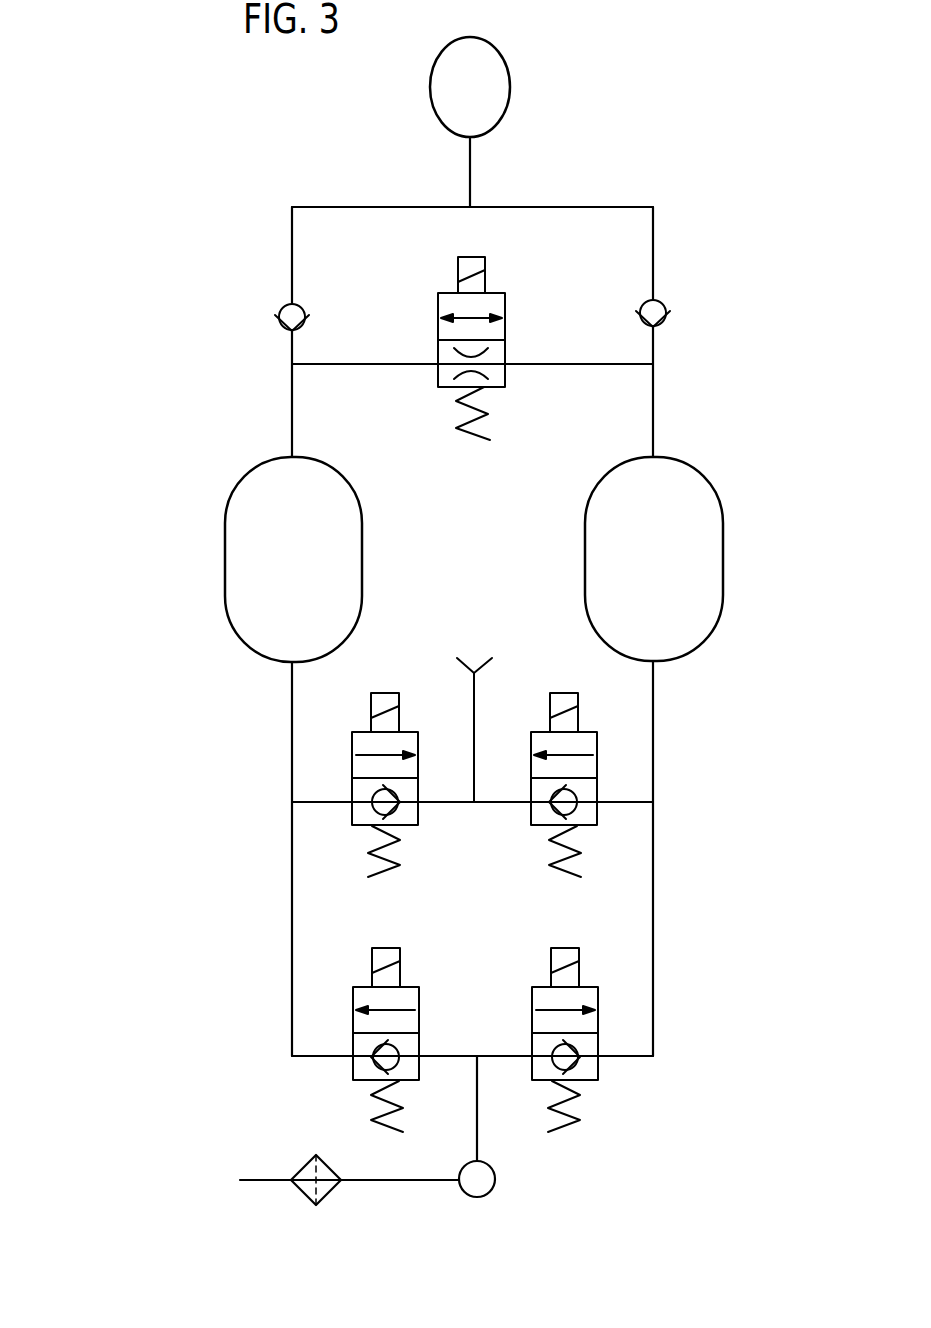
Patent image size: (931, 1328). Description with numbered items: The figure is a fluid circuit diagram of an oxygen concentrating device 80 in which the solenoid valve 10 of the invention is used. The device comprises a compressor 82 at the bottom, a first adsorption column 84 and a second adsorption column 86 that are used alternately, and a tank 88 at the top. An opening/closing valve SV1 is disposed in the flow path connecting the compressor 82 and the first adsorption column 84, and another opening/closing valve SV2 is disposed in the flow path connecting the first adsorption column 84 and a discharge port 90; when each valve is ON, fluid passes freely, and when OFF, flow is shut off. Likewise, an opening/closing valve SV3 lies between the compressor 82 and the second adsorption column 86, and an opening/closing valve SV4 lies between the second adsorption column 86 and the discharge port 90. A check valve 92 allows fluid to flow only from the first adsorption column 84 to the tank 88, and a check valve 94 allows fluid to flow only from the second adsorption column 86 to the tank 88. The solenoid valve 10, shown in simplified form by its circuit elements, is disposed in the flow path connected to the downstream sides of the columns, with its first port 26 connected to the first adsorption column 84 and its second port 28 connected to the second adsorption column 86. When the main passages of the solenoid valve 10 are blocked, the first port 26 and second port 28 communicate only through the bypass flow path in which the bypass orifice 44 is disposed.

The oxygen concentrating device 80 is at (326, 94).
The tank 88 is at (508, 63).
The solenoid valve 10 is at (482, 365).
The first port 26 is at (438, 366).
The second port 28 is at (505, 366).
The bypass orifice 44 is at (468, 373).
The check valve 92 is at (284, 306).
The check valve 94 is at (661, 305).
The first adsorption column 84 is at (242, 503).
The second adsorption column 86 is at (705, 500).
The discharge port 90 is at (468, 660).
The compressor 82 is at (496, 1180).
The opening/closing valve SV1 is at (388, 953).
The opening/closing valve SV2 is at (387, 698).
The opening/closing valve SV3 is at (568, 953).
The opening/closing valve SV4 is at (568, 698).